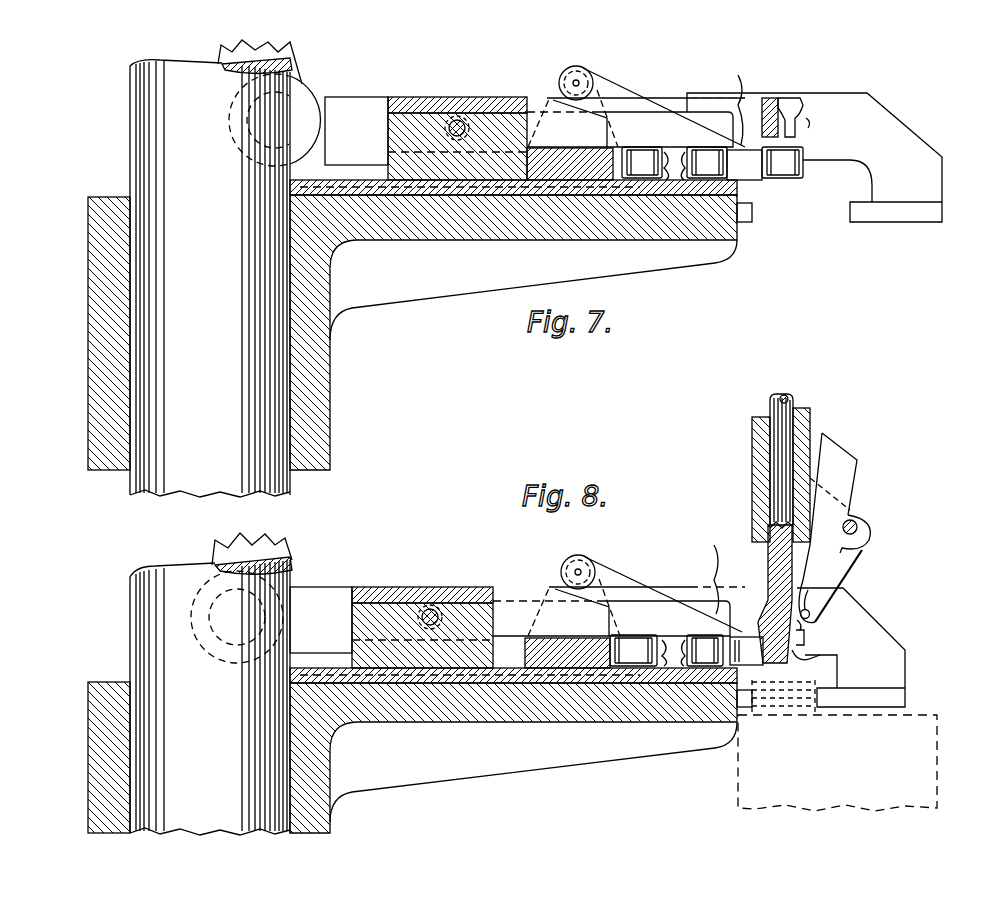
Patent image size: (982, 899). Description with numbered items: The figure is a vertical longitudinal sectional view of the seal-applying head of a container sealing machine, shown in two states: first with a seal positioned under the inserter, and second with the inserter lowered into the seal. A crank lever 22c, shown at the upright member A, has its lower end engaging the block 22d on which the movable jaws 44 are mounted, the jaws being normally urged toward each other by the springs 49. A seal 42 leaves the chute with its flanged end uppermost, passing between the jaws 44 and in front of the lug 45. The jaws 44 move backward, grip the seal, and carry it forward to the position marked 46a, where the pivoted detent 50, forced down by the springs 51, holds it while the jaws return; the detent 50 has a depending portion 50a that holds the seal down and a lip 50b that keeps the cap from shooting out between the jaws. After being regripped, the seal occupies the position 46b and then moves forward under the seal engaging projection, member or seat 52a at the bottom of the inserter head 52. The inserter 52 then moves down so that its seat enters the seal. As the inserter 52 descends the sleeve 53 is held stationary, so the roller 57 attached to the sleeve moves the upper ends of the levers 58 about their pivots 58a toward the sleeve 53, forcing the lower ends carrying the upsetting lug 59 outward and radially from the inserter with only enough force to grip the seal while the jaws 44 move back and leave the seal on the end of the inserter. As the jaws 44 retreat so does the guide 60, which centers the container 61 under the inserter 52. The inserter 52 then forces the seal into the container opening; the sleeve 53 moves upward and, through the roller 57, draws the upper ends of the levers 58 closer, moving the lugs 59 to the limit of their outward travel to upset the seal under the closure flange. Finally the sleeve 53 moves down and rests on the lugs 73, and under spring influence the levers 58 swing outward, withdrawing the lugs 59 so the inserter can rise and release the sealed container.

In FIG. 7, the post A is at (272, 400).
In FIG. 8, the post A is at (142, 628).
In FIG. 7, the crank lever 22c is at (300, 53).
In FIG. 8, the crank lever 22c is at (272, 545).
In FIG. 7, the block 22d is at (378, 88).
In FIG. 8, the block 22d is at (345, 587).
In FIG. 7, the seal 42 is at (786, 170).
In FIG. 8, the seal 42 is at (700, 665).
In FIG. 7, the jaws 44 is at (747, 168).
In FIG. 8, the jaws 44 is at (752, 665).
In FIG. 7, the lug 45 is at (576, 160).
In FIG. 8, the lug 45 is at (570, 655).
In FIG. 7, the seal position 46a is at (690, 150).
In FIG. 8, the seal position 46a is at (694, 643).
In FIG. 7, the seal position 46b is at (823, 131).
In FIG. 8, the seal position 46b is at (822, 623).
In FIG. 7, the springs 49 is at (459, 97).
In FIG. 8, the springs 49 is at (434, 587).
In FIG. 7, the pivoted detent 50 is at (660, 100).
In FIG. 8, the pivoted detent 50 is at (664, 590).
In FIG. 7, the depending portion 50a is at (604, 138).
In FIG. 8, the depending portion 50a is at (604, 622).
In FIG. 7, the lip 50b is at (728, 99).
In FIG. 8, the lip 50b is at (710, 570).
In FIG. 7, the springs 51 is at (546, 97).
In FIG. 8, the springs 51 is at (547, 586).
In FIG. 7, the inserter 52 is at (770, 98).
In FIG. 8, the inserter 52 is at (758, 605).
In FIG. 7, the seal engaging seat 52a is at (805, 104).
In FIG. 8, the seal engaging seat 52a is at (818, 660).
In FIG. 8, the sleeve 53 is at (752, 463).
In FIG. 8, the roller 57 is at (860, 522).
In FIG. 8, the levers 58 is at (838, 478).
In FIG. 8, the pivots 58a is at (812, 613).
In FIG. 8, the upsetting lug 59 is at (806, 639).
In FIG. 7, the guide 60 is at (908, 137).
In FIG. 8, the guide 60 is at (908, 661).
In FIG. 8, the container 61 is at (918, 753).
In FIG. 8, the lugs 73 is at (865, 556).